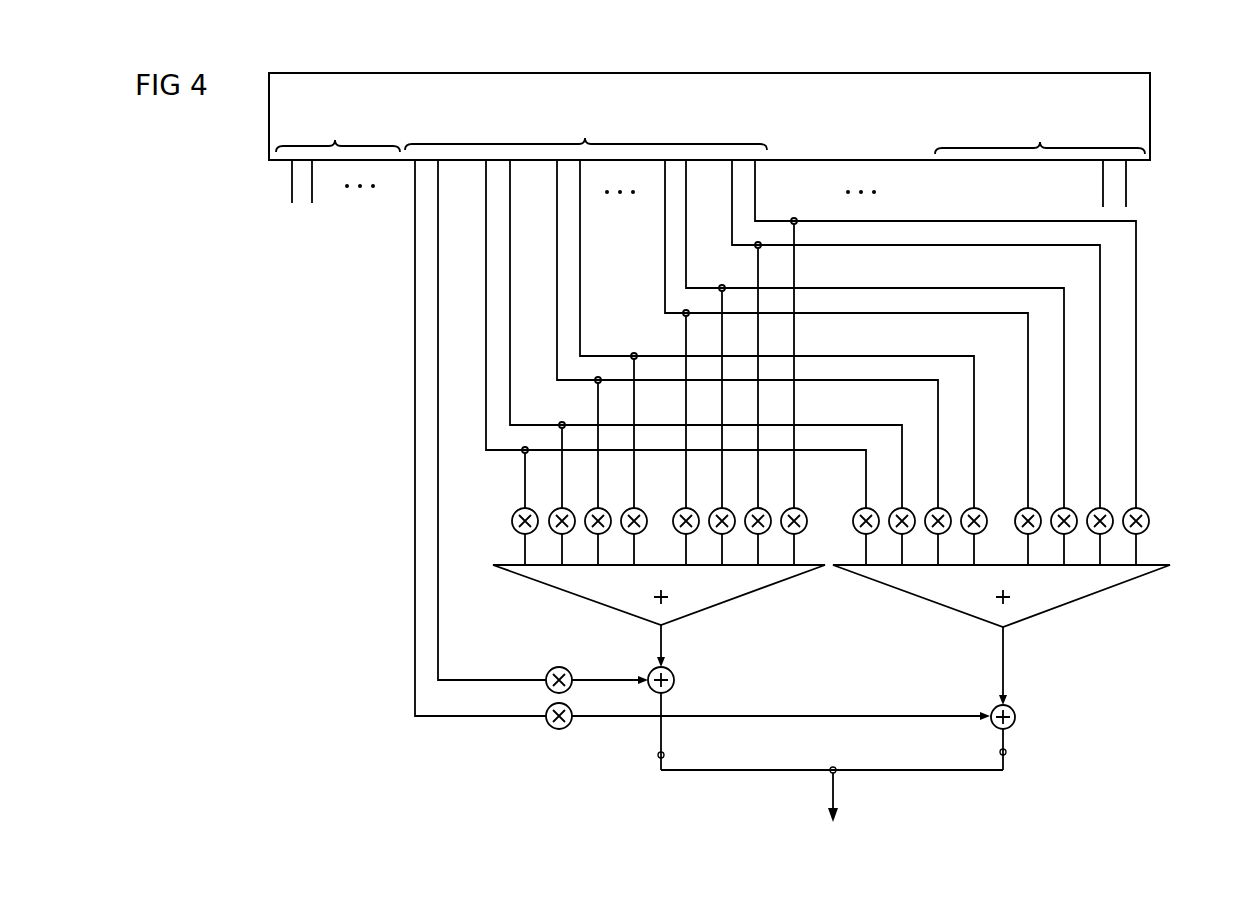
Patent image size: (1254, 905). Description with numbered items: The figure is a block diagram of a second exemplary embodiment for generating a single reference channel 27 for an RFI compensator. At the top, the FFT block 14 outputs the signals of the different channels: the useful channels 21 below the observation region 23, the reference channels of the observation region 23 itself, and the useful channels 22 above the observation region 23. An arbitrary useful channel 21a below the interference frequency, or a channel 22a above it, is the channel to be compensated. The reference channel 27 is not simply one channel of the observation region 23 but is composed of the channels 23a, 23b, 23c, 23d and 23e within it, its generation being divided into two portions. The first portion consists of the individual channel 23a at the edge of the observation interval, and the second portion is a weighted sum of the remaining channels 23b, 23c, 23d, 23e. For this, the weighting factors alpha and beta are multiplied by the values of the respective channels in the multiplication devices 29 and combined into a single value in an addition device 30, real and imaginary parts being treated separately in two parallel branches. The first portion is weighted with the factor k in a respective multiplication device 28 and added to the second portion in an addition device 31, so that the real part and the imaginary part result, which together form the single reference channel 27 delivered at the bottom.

The FFT block 14 is at (1150, 120).
The useful channels below the observation region 21 is at (338, 130).
The useful channel to be compensated 21a is at (302, 190).
The useful channels above the observation region 22 is at (1040, 130).
The useful channel above the interference frequency 22a is at (1118, 187).
The observation region 23 is at (586, 128).
The individual channel of the observation interval 23a is at (438, 234).
The remaining channel of the observation region 23b is at (557, 233).
The remaining channel of the observation region 23c is at (665, 258).
The remaining channel of the observation region 23d is at (732, 204).
The remaining channel of the observation region 23e is at (510, 296).
The single reference channel 27 is at (838, 790).
The multiplication device 28 is at (546, 671).
The multiplication devices 29 is at (495, 521).
The addition device 30 is at (765, 592).
The addition device 31 is at (676, 680).